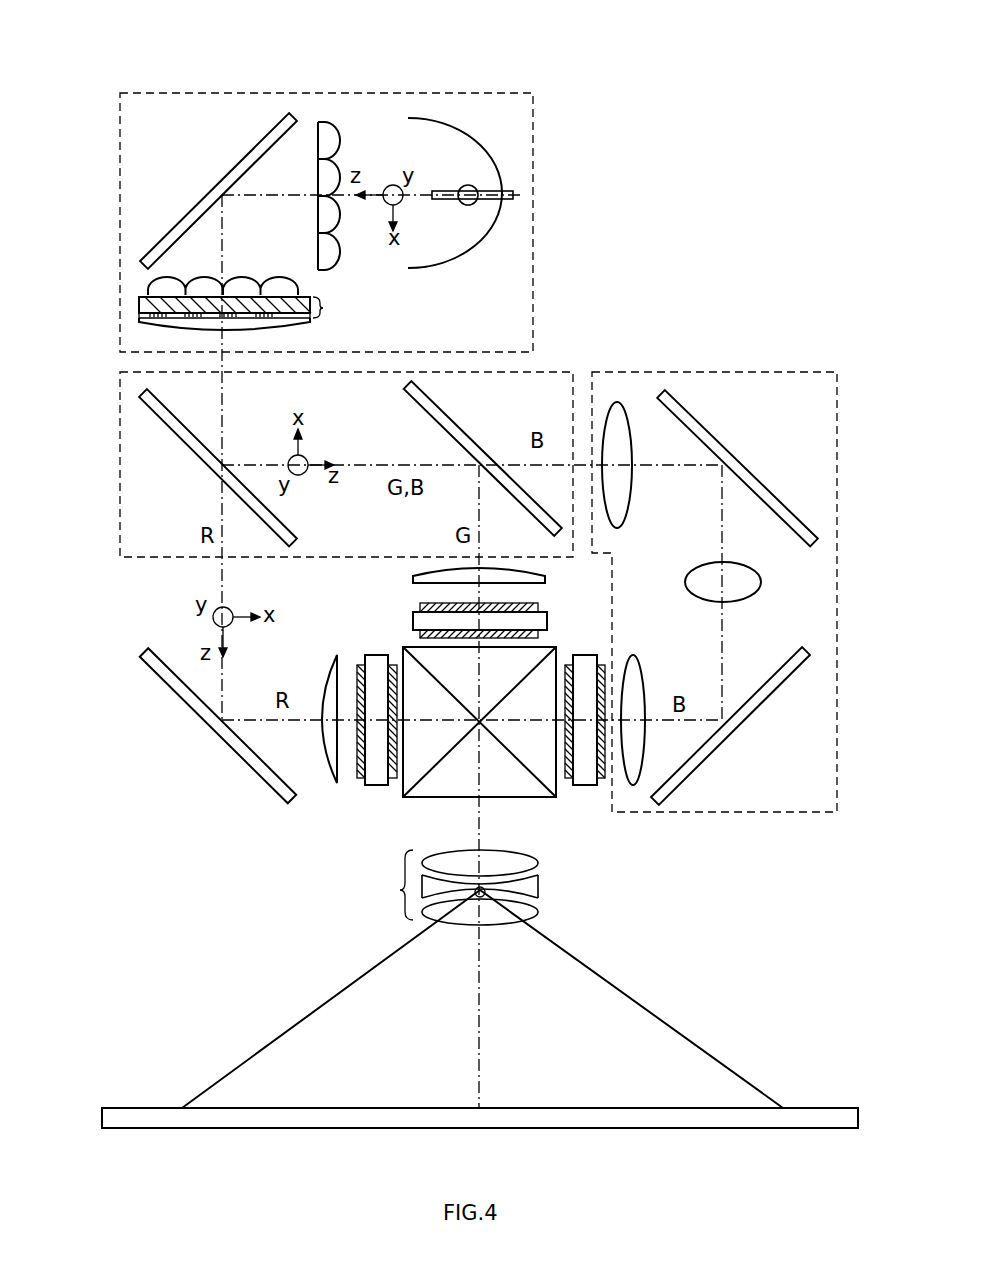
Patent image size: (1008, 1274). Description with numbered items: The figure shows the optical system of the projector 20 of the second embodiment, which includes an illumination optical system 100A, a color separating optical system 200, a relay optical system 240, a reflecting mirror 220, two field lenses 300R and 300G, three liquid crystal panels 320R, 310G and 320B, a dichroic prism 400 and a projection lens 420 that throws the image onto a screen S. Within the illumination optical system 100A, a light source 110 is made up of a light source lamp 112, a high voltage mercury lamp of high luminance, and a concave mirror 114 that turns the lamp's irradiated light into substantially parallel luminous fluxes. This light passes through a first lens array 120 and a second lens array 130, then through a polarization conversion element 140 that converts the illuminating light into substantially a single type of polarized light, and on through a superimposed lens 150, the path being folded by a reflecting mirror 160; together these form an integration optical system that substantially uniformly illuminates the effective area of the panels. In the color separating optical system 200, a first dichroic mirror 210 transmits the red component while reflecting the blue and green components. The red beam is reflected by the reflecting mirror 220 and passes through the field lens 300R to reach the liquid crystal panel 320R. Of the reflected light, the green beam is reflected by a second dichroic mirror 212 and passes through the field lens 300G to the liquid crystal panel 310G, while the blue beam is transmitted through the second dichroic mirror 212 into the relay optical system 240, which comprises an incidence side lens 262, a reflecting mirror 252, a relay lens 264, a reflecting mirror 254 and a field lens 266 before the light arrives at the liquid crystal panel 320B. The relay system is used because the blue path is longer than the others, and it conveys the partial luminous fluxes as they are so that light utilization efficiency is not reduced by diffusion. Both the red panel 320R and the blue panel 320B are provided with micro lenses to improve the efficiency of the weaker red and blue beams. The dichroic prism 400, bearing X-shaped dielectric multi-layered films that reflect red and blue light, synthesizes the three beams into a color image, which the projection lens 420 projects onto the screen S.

The projector 20 is at (498, 32).
The illumination optical system 100A is at (120, 175).
The light source 110 is at (477, 256).
The light source lamp 112 is at (468, 206).
The concave mirror 114 is at (478, 148).
The first lens array 120 is at (338, 262).
The second lens array 130 is at (273, 280).
The polarization conversion element 140 is at (323, 308).
The superimposed lens 150 is at (278, 329).
The reflecting mirror 160 is at (270, 128).
The color separating optical system 200 is at (120, 448).
The first dichroic mirror 210 is at (192, 450).
The second dichroic mirror 212 is at (425, 415).
The reflecting mirror 220 is at (187, 707).
The relay optical system 240 is at (750, 815).
The reflecting mirror 252 is at (705, 423).
The reflecting mirror 254 is at (708, 760).
The incidence side lens 262 is at (630, 480).
The relay lens 264 is at (748, 595).
The field lens 266 is at (642, 660).
The field lens 300G is at (413, 570).
The field lens 300R is at (335, 785).
The liquid crystal panel 310G is at (413, 617).
The liquid crystal panel 320R is at (375, 785).
The liquid crystal panel 320B is at (585, 785).
The dichroic prism 400 is at (520, 797).
The projection lens 420 is at (405, 890).
The screen S is at (820, 1108).